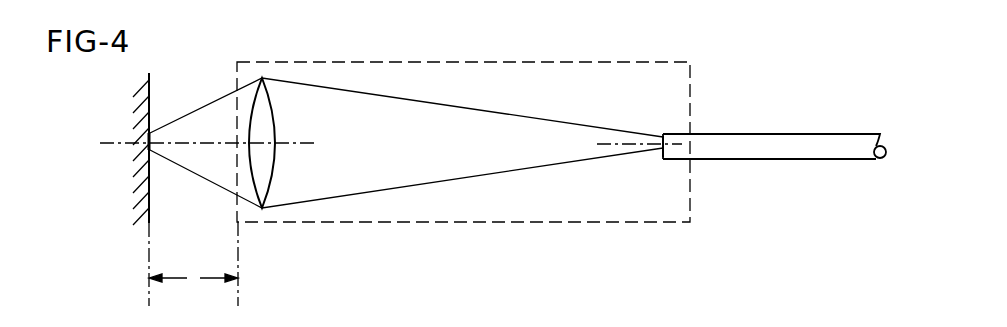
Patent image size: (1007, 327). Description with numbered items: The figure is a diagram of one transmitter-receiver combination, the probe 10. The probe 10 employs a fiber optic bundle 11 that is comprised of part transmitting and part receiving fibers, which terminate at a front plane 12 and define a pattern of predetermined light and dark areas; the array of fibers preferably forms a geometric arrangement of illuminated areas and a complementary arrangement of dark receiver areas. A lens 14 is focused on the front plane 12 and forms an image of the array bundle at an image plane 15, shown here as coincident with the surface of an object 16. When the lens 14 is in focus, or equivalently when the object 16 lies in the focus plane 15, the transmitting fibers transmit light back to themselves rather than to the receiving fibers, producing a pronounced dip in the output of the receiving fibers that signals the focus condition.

The probe 10 is at (640, 62).
The fiber optic bundle 11 is at (723, 141).
The front plane 12 is at (662, 148).
The lens 14 is at (265, 110).
The image plane 15 is at (150, 135).
The object 16 is at (150, 185).